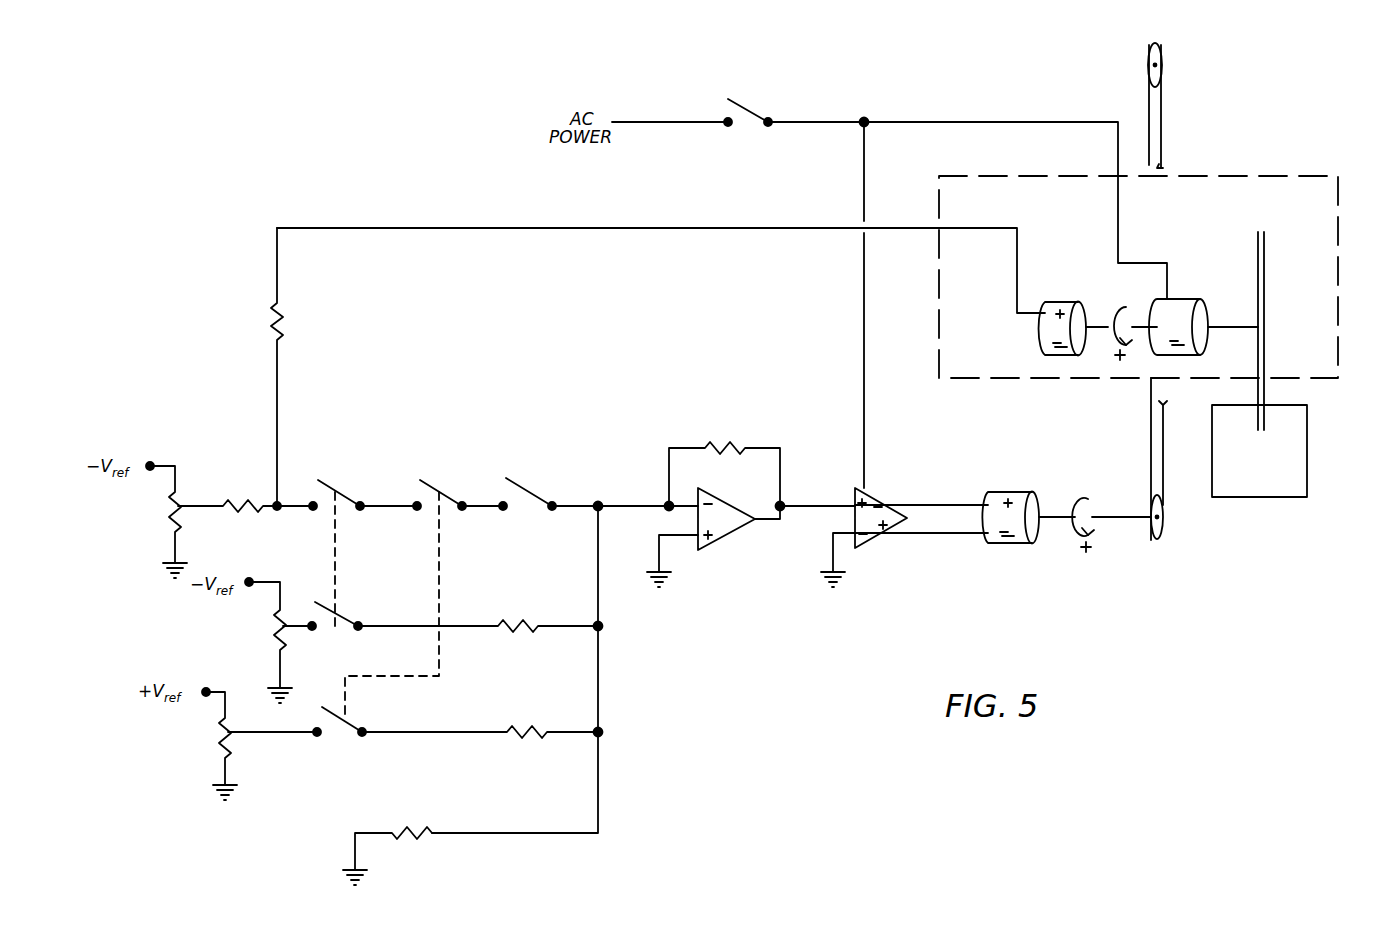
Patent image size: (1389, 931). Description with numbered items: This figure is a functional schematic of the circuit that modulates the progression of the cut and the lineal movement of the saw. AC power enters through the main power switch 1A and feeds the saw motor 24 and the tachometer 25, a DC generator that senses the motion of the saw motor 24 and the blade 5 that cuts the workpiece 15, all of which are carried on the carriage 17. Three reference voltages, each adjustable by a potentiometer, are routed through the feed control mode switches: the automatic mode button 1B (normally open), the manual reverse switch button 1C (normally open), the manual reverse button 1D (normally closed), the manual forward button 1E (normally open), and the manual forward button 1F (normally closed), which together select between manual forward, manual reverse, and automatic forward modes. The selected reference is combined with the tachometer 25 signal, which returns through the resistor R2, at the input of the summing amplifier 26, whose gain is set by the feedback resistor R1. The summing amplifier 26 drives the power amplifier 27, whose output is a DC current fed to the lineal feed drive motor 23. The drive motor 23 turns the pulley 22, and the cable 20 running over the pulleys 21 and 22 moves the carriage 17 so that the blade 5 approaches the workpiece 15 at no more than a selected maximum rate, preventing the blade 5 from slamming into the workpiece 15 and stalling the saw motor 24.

The main power switch AC 1A is at (752, 108).
The automatic mode button 1B is at (535, 490).
The manual reverse switch button 1C is at (340, 731).
The manual reverse button 1D is at (448, 492).
The manual forward button 1E is at (347, 613).
The manual forward button 1F is at (345, 492).
The blade 5 is at (1265, 268).
The workpiece 15 is at (1307, 447).
The carriage 17 is at (1303, 172).
The cable 20 is at (1148, 445).
The pulley 21 is at (1163, 65).
The pulley 22 is at (1153, 538).
The lineal feed drive motor 23 is at (1010, 545).
The saw motor 24 is at (1184, 305).
The tachometer 25 is at (1068, 308).
The summing amplifier 26 is at (730, 540).
The power amplifier 27 is at (876, 542).
The feedback resistor R1 is at (725, 464).
The resistor R2 is at (293, 367).